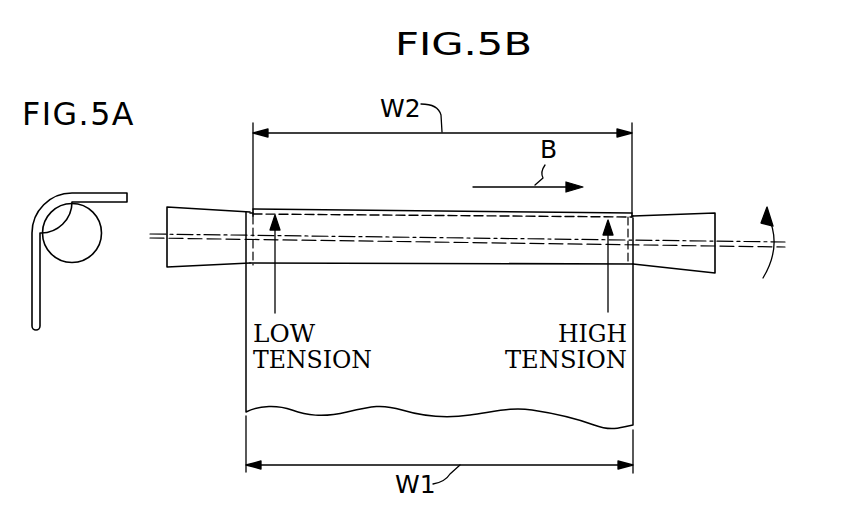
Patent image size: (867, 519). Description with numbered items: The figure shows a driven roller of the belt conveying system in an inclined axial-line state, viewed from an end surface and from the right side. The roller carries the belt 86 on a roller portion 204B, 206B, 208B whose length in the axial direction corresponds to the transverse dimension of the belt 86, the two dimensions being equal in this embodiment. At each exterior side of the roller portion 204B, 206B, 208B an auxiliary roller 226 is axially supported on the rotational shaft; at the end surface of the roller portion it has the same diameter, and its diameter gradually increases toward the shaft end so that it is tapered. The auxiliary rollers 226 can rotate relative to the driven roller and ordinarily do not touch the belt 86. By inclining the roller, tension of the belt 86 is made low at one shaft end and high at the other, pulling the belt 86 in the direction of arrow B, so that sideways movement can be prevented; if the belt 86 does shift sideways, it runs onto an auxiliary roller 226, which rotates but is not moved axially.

In FIG. 5A, the belt 86 is at (100, 195).
In FIG. 5B, the belt 86 is at (357, 211).
In FIG. 5A, the auxiliary roller 226 is at (77, 258).
In FIG. 5B, the auxiliary roller 226 is at (203, 257).
In FIG. 5B, the roller portion 204B is at (439, 320).
In FIG. 5B, the roller portion 206B is at (439, 320).
In FIG. 5B, the roller portion 208B is at (438, 253).